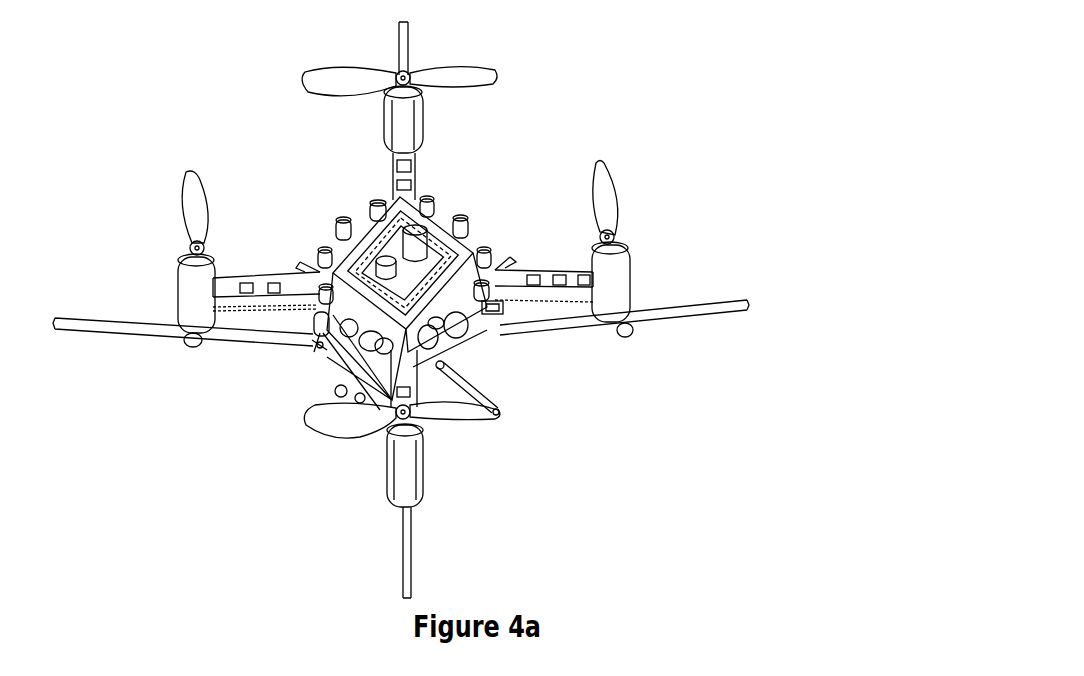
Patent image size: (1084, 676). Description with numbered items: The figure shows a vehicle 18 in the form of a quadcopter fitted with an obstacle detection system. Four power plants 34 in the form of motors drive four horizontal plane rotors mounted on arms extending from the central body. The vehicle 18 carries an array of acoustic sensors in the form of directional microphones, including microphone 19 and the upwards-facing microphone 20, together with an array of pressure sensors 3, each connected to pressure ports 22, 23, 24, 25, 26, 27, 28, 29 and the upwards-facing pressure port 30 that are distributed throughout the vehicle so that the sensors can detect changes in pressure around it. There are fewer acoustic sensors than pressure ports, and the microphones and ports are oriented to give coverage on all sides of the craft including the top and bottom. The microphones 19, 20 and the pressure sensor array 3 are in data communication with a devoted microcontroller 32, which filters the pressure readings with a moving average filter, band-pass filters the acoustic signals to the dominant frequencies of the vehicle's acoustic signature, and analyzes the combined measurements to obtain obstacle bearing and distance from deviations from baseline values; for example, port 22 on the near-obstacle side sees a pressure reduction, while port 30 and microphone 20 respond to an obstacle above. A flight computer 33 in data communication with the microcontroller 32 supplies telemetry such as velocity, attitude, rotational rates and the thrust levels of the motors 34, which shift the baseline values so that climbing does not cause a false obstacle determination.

The pressure sensor array 3 is at (323, 347).
The vehicle 18 is at (217, 135).
The directional microphone 19 is at (480, 317).
The directional microphone 20 is at (388, 262).
The pressure port 22 is at (303, 433).
The pressure port 23 is at (403, 550).
The pressure port 24 is at (498, 415).
The pressure port 25 is at (725, 303).
The pressure port 26 is at (510, 257).
The pressure port 27 is at (403, 37).
The pressure port 28 is at (305, 263).
The pressure port 29 is at (70, 327).
The pressure port 30 is at (413, 230).
The microcontroller 32 is at (370, 357).
The flight computer 33 is at (435, 322).
The power plant 34 is at (412, 103).